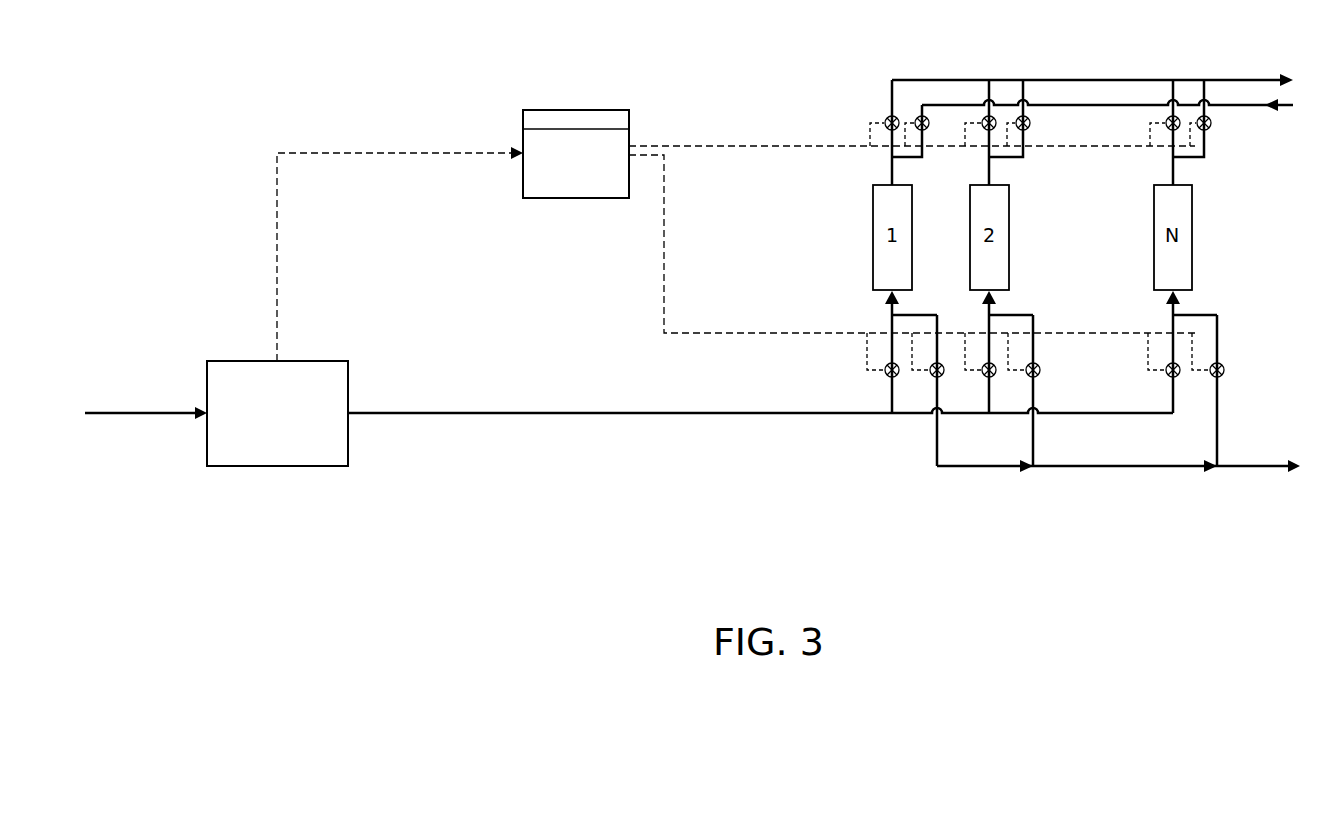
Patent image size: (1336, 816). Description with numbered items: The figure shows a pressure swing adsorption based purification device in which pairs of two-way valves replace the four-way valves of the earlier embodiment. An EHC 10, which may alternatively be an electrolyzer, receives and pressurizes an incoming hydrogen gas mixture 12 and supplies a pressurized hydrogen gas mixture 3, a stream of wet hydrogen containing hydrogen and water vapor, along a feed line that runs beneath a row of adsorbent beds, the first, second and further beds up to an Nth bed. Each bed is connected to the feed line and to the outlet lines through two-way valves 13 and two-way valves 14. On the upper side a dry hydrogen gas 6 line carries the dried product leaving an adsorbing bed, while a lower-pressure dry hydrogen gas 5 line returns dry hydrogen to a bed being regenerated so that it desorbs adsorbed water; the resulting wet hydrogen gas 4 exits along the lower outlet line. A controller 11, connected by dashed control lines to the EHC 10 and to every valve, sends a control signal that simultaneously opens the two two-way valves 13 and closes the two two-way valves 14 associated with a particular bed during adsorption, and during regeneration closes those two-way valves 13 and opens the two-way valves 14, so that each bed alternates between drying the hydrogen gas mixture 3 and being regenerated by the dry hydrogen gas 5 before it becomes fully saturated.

The hydrogen gas mixture 3 is at (512, 411).
The wet hydrogen gas 4 is at (1130, 467).
The dry hydrogen gas 5 is at (1093, 104).
The dry hydrogen gas 6 is at (1158, 79).
The EHC 10 is at (277, 467).
The controller 11 is at (565, 197).
The hydrogen gas mixture 12 is at (135, 412).
The two-way valves 13 is at (885, 116).
The two-way valves 14 is at (917, 116).